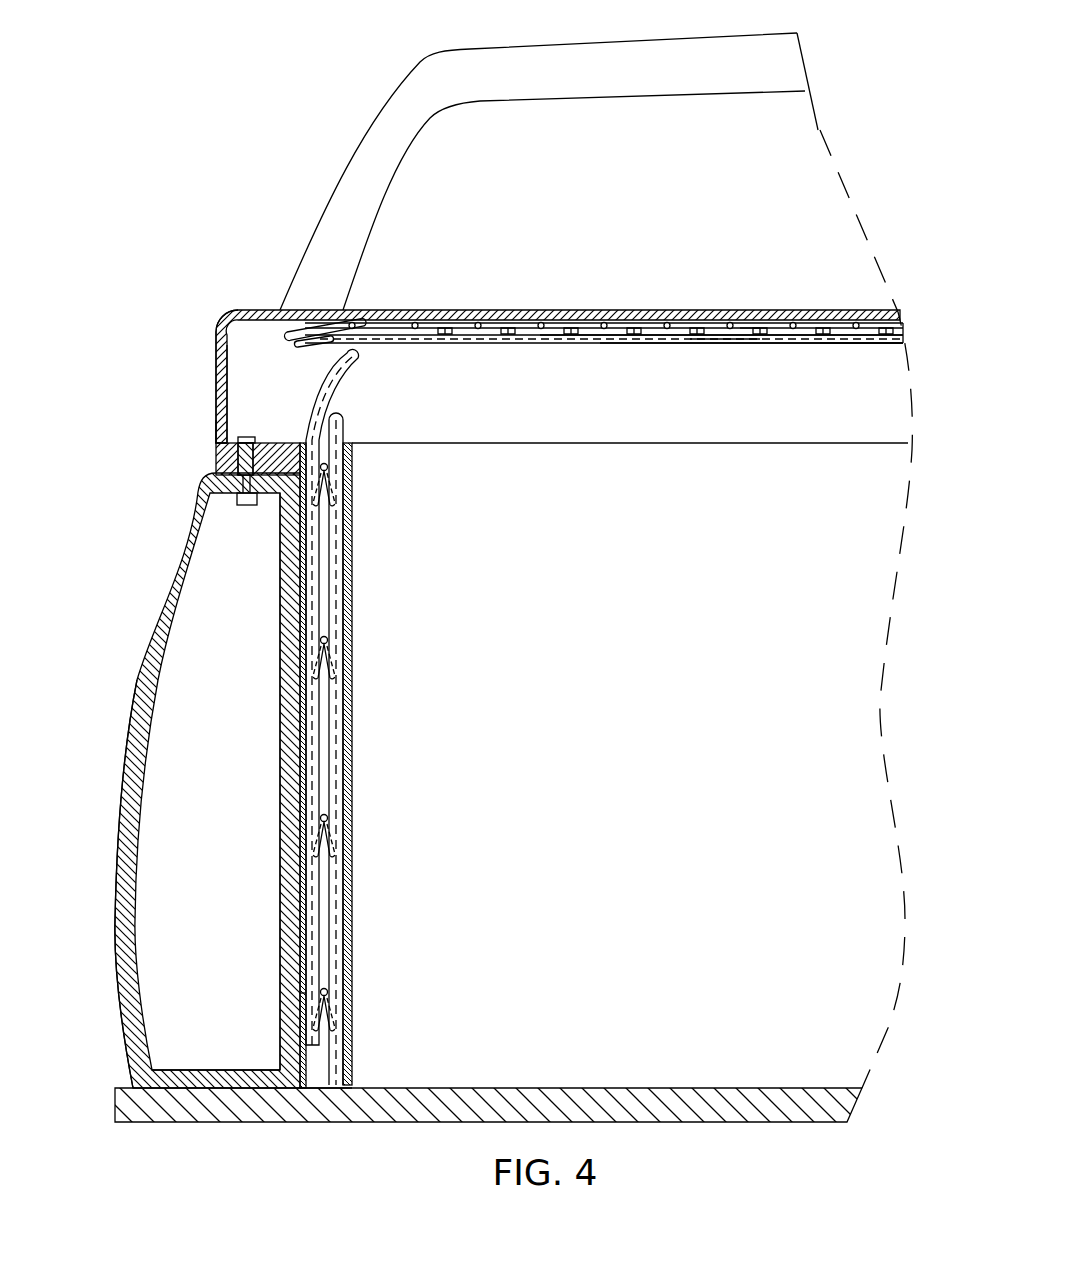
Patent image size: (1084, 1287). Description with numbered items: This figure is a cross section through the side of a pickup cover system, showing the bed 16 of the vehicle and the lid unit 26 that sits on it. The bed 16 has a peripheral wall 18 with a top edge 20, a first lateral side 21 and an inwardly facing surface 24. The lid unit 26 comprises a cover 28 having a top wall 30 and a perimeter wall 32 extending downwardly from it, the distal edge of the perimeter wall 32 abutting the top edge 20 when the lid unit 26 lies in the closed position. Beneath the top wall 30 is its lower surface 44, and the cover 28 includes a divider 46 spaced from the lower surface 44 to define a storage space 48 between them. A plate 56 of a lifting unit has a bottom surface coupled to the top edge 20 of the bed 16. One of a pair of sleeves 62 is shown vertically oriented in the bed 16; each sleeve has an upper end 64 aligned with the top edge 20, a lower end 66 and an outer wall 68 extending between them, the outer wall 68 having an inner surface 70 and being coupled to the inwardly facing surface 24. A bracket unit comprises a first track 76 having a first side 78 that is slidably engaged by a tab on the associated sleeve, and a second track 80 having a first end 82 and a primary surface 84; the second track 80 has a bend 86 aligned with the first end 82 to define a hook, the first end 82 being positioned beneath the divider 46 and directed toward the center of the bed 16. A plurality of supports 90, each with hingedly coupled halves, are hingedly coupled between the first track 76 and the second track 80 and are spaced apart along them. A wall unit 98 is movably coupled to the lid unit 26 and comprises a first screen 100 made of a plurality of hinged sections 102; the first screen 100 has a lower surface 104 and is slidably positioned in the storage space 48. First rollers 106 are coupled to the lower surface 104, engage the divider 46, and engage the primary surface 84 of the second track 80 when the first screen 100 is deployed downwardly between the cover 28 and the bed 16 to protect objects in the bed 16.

The bed 16 is at (137, 660).
The peripheral wall 18 is at (130, 812).
The top edge 20 is at (215, 432).
The first lateral side 21 is at (118, 932).
The inwardly facing surface 24 is at (323, 603).
The lid unit 26 is at (503, 300).
The cover 28 is at (222, 318).
The top wall 30 is at (312, 310).
The perimeter wall 32 is at (215, 362).
The lower surface 44 is at (615, 365).
The divider 46 is at (835, 340).
The storage space 48 is at (810, 312).
The plate 56 is at (216, 458).
The sleeves 62 is at (350, 1045).
The upper end 64 is at (390, 320).
The lower end 66 is at (330, 1095).
The outer wall 68 is at (300, 993).
The inner surface 70 is at (312, 950).
The first track 76 is at (352, 633).
The first side 78 is at (352, 710).
The second track 80 is at (320, 780).
The first end 82 is at (300, 335).
The primary surface 84 is at (310, 540).
The bend 86 is at (312, 395).
The supports 90 is at (328, 833).
The wall unit 98 is at (713, 348).
The first screen 100 is at (557, 333).
The hinged sections 102 is at (420, 333).
The lower surface 104 is at (750, 333).
The first rollers 106 is at (695, 330).